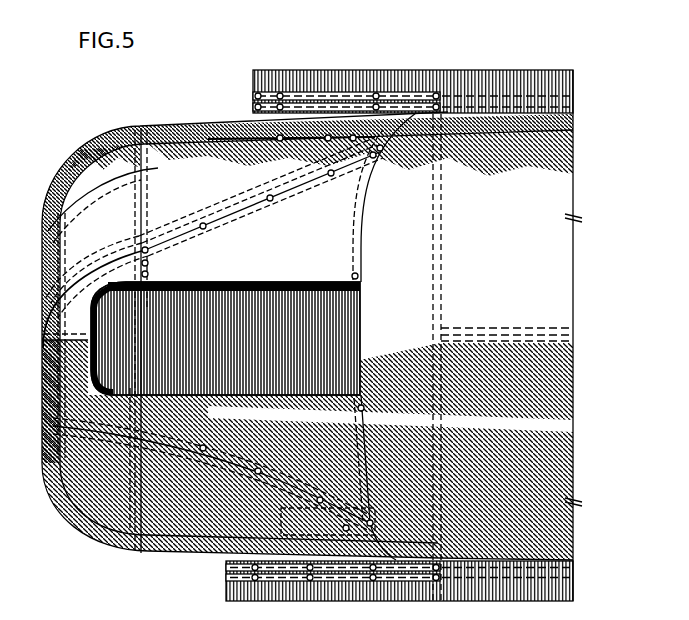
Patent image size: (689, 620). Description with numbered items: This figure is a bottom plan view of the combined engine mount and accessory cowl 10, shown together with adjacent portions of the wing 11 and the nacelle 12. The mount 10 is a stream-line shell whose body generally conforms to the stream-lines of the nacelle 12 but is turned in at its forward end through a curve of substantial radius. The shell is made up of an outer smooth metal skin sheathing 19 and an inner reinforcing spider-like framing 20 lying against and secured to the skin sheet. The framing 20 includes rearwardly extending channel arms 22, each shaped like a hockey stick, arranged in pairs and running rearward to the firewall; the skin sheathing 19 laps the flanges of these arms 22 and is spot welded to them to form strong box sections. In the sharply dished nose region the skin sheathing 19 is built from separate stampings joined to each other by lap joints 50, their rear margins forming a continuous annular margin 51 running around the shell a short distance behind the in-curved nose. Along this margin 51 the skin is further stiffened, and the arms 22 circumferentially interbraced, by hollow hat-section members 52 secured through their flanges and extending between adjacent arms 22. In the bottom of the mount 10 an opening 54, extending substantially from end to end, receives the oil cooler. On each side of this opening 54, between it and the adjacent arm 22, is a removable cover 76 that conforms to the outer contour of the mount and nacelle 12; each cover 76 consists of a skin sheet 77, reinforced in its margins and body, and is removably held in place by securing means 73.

The combined engine mount and accessory cowl 10 is at (166, 548).
The wing 11 is at (366, 65).
The nacelle 12 is at (548, 537).
The outer smooth metal skin sheathing 19 is at (80, 218).
The inner reinforcing spider-like framing 20 is at (95, 292).
The rearwardly extending arms 22 is at (198, 199).
The lap joints 50 is at (88, 182).
The annular margin 51 is at (139, 201).
The hat-section members 52 is at (136, 183).
The opening 54 is at (212, 275).
The securing means 73 is at (195, 222).
The removable cover 76 is at (345, 220).
The skin sheet 77 is at (262, 233).